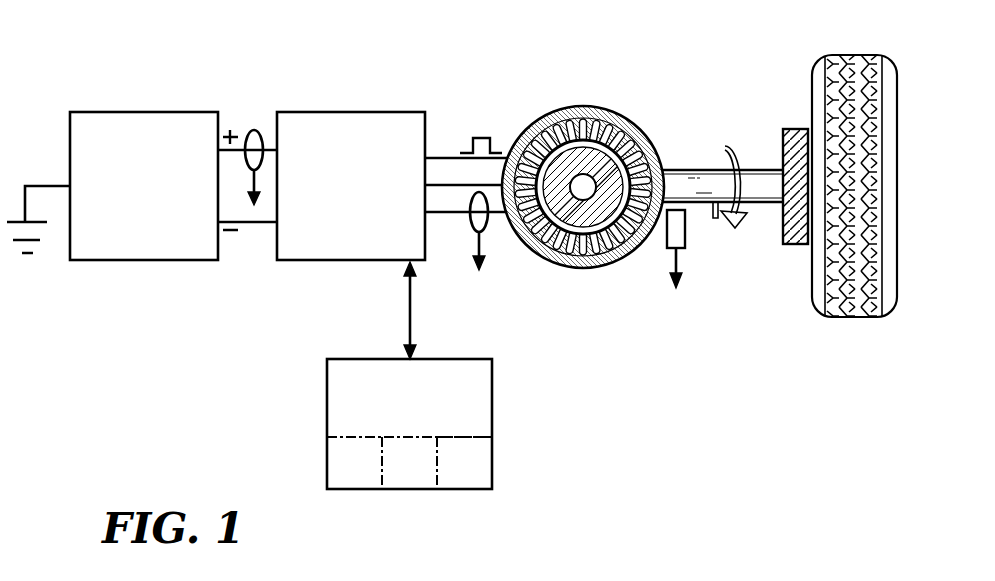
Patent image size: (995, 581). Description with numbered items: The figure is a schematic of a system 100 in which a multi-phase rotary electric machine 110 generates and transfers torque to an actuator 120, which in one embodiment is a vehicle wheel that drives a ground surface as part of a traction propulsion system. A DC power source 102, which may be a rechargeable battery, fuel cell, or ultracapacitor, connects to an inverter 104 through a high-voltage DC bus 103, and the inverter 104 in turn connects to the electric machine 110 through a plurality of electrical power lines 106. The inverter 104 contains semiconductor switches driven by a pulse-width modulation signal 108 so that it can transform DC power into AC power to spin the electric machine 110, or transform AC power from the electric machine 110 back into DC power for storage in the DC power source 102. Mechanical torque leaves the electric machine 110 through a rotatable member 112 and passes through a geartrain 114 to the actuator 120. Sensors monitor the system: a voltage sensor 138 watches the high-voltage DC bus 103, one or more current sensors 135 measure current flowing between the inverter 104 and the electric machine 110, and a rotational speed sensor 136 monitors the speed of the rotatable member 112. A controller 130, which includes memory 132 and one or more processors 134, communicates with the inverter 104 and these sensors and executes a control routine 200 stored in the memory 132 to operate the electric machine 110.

The system 100 is at (196, 72).
The DC power source 102 is at (167, 198).
The high-voltage DC bus 103 is at (233, 134).
The inverter 104 is at (373, 197).
The electrical power lines 106 is at (441, 185).
The pulse-width modulation signal 108 is at (480, 136).
The multi-phase rotary electric machine 110 is at (579, 105).
The rotatable member 112 is at (750, 164).
The geartrain 114 is at (797, 245).
The actuator 120 is at (848, 317).
The controller 130 is at (432, 413).
The memory 132 is at (360, 465).
The processors 134 is at (412, 465).
The current sensors 135 is at (488, 222).
The rotational speed sensor 136 is at (685, 235).
The voltage sensor 138 is at (262, 166).
The control routine 200 is at (462, 465).